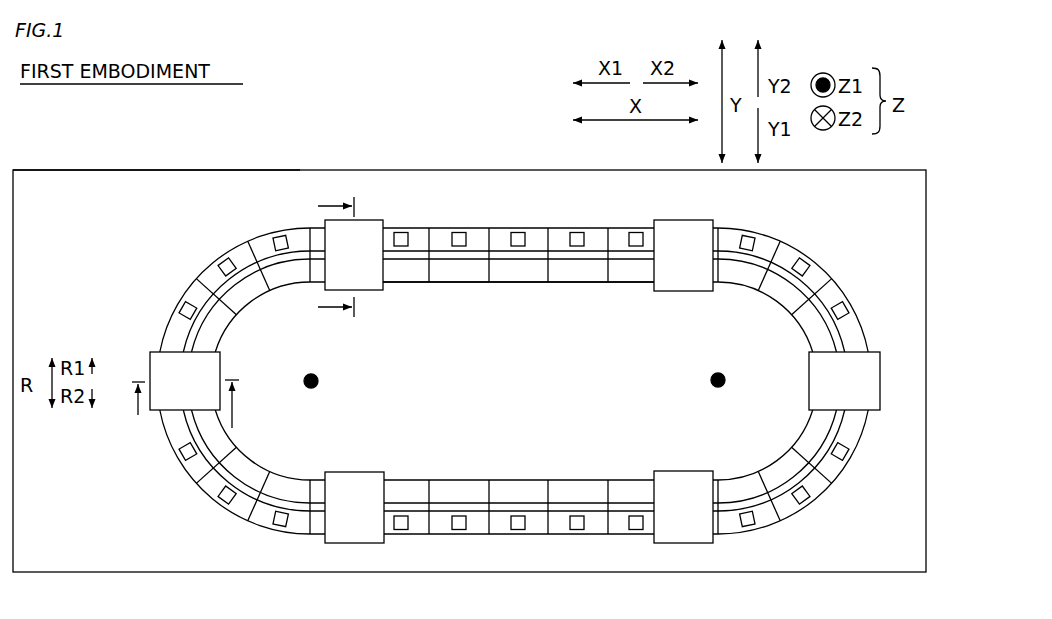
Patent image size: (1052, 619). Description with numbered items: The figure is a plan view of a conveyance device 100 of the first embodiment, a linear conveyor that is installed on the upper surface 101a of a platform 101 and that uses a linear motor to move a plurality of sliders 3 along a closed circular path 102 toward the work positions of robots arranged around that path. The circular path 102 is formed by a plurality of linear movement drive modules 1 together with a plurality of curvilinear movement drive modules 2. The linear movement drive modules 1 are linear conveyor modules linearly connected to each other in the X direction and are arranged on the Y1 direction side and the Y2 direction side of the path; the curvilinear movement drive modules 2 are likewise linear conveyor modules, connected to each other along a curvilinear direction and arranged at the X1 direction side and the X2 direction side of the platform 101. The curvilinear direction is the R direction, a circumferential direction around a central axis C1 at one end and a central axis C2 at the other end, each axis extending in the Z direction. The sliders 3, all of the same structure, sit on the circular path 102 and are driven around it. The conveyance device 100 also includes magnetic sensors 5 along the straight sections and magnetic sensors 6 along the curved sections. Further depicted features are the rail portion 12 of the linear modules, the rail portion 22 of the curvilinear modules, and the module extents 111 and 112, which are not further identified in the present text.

The conveyance device 100 is at (463, 147).
The platform 101 is at (340, 169).
The upper surface 101a is at (190, 185).
The circular path 102 is at (494, 290).
The linear movement drive module 1 is at (414, 284).
The curvilinear movement drive module 2 is at (253, 300).
The slider 3 is at (378, 292).
The magnetic sensor 5 is at (402, 231).
The magnetic sensor 6 is at (760, 238).
The straight guide rail 12 is at (559, 261).
The curved guide rail 22 is at (737, 263).
The straight module length 111 is at (335, 258).
The curved module length 112 is at (186, 404).
The central axis C1 is at (316, 387).
The central axis C2 is at (712, 386).